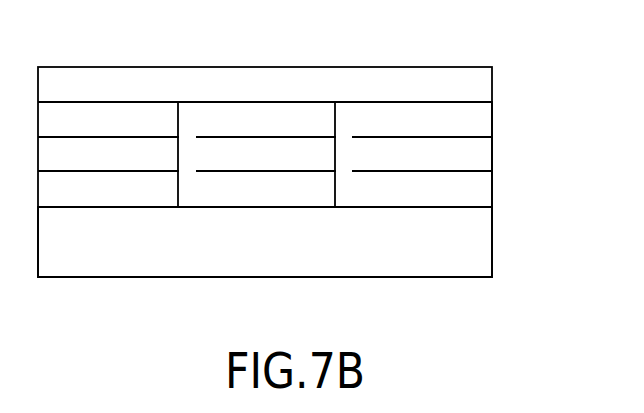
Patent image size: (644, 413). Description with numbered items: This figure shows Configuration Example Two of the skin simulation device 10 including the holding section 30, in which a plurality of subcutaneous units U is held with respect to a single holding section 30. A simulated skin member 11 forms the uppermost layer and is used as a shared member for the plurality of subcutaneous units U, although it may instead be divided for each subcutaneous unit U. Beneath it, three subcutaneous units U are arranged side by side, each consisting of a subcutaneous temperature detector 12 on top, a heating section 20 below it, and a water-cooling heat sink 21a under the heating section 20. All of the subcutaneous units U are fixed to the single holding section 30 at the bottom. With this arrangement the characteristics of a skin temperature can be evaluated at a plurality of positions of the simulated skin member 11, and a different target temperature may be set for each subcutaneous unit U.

The skin simulation device 10 is at (535, 70).
The simulated skin member 11 is at (265, 87).
The subcutaneous temperature detector 12 is at (265, 119).
The heating section 20 is at (265, 154).
The water-cooling heat sink 21a is at (265, 189).
The holding section 30 is at (265, 242).
The subcutaneous unit U is at (507, 105).